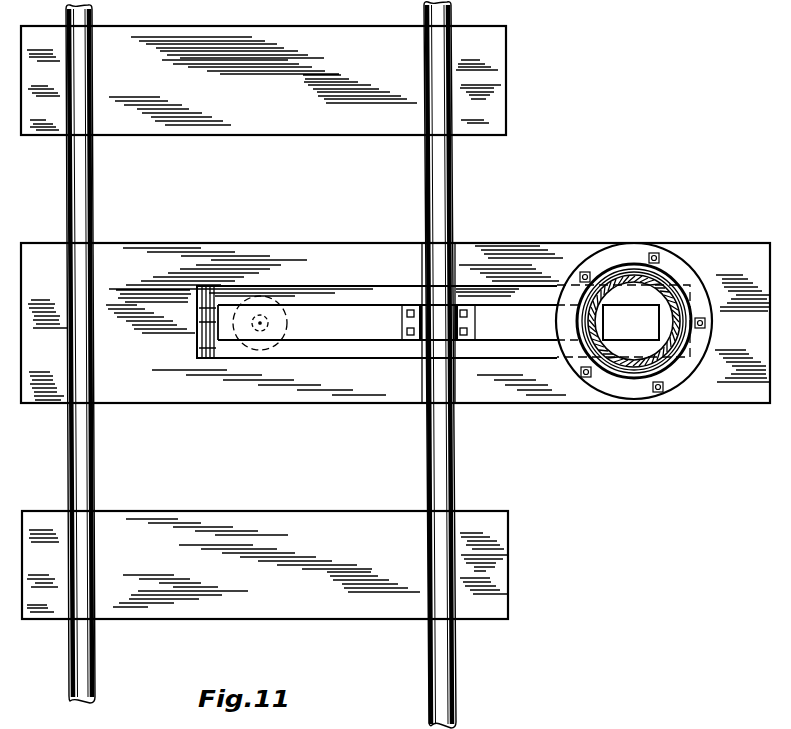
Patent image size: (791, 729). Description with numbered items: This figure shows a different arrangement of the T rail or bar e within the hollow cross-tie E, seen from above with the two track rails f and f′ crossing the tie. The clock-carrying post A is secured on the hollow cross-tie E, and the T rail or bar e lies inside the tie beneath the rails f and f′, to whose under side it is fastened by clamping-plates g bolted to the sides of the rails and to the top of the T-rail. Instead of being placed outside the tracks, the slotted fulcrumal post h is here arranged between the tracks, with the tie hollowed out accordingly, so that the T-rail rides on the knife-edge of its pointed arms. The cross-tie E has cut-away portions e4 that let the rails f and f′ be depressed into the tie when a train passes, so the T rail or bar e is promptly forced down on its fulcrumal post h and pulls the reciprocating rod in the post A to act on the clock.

The rail f is at (93, 193).
The rail f′ is at (453, 205).
The cut-away portions e4 is at (461, 418).
The hollow cross-tie E is at (443, 306).
The T rail or bar e is at (399, 322).
The slotted fulcrumal post h is at (264, 344).
The clamping-plate g is at (402, 321).
The clock-carrying post A is at (632, 363).